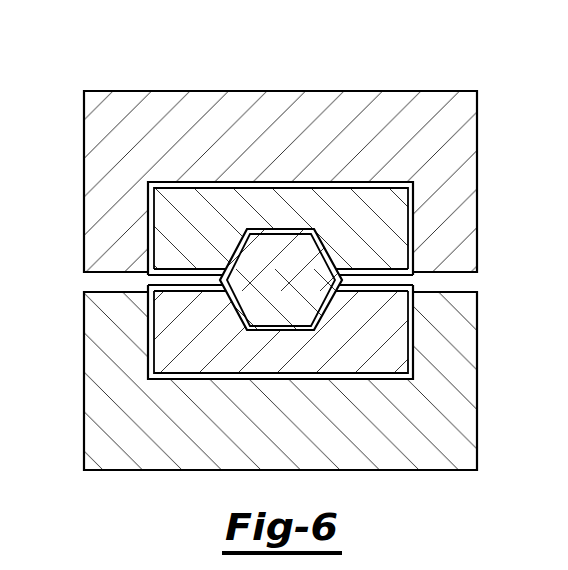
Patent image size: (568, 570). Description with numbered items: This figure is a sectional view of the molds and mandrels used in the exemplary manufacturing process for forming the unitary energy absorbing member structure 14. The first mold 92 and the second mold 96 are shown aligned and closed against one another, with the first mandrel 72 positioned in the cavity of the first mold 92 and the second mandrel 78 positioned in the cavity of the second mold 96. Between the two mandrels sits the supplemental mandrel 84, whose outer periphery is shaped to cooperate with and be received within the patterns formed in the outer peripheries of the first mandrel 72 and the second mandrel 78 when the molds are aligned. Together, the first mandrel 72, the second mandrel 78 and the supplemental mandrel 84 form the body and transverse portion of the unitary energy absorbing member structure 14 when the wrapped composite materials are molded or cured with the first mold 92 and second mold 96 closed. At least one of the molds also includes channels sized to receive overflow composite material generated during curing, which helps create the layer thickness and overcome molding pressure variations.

The unitary energy absorbing member structure 14 is at (194, 170).
The second mold 96 is at (439, 80).
The first mold 92 is at (438, 482).
The second mandrel 78 is at (394, 226).
The first mandrel 72 is at (394, 348).
The supplemental mandrel 84 is at (260, 293).